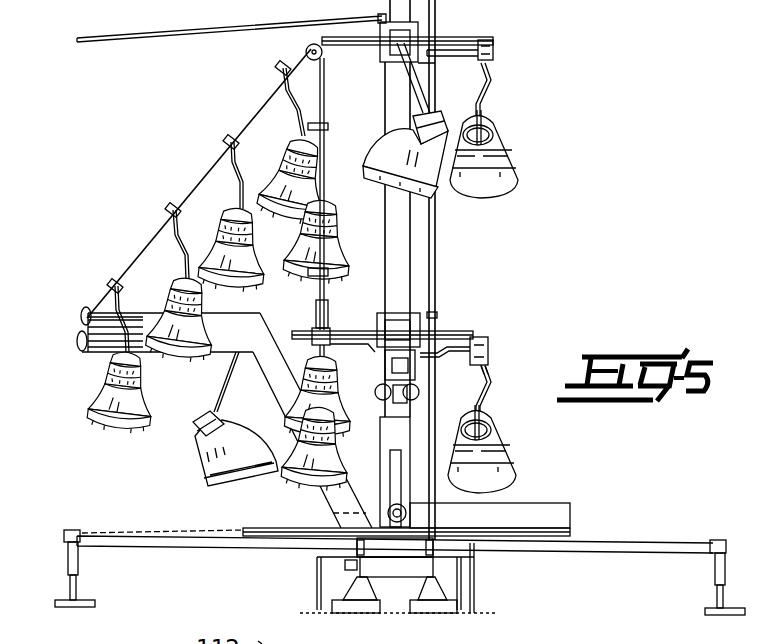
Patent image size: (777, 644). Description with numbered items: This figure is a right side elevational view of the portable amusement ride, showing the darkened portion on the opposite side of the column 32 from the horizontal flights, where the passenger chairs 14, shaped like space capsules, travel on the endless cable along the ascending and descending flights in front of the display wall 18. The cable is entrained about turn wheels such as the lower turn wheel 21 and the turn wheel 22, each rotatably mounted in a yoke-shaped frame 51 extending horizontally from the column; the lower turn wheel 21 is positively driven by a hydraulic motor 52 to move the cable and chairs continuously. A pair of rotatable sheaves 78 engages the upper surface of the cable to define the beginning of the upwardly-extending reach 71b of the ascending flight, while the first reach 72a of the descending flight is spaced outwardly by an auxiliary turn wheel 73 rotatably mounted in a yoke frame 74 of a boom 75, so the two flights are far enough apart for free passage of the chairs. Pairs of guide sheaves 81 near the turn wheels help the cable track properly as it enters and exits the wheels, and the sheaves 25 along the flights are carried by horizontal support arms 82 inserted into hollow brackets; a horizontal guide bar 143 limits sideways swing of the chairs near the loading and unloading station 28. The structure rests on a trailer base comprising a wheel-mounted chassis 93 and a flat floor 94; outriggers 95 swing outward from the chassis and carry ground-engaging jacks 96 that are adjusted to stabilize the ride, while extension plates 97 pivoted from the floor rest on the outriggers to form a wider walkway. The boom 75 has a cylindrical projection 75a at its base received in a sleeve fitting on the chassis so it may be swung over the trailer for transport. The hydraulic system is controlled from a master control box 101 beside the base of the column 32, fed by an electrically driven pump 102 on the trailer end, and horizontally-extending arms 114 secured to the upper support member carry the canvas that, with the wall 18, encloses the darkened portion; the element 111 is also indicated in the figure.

The horizontally-extending arm 114 is at (157, 41).
The yoke-shaped frame 51 is at (418, 8).
The turn wheel 22 is at (462, 37).
The guide sheave 81 is at (308, 53).
The rotatable sheave 25 is at (494, 52).
The support arm 82 is at (479, 60).
The upwardly-extending reach 71b is at (327, 103).
The passenger chair 14 is at (227, 467).
The first reach of the descending flight 72a is at (204, 176).
The column 32 is at (418, 245).
The display wall 18 is at (436, 262).
The yoke frame 74 is at (158, 312).
The auxiliary turn wheel 73 is at (107, 348).
The boom 75 is at (281, 338).
The rotatable sheave 78 is at (325, 318).
The lower turn wheel 21 is at (456, 331).
The horizontal guide bar 143 is at (490, 368).
The hydraulic motor 52 is at (392, 398).
The master control box 101 is at (385, 440).
The electrically driven pump 102 is at (387, 505).
The unloading station 28 is at (537, 499).
The floor 94 is at (450, 532).
The extension plate 97 is at (257, 528).
The chassis 93 is at (397, 574).
The outrigger 95 is at (85, 541).
The jack 96 is at (68, 558).
The cylindrical projection 75a is at (348, 565).
The connector 111 is at (258, 641).